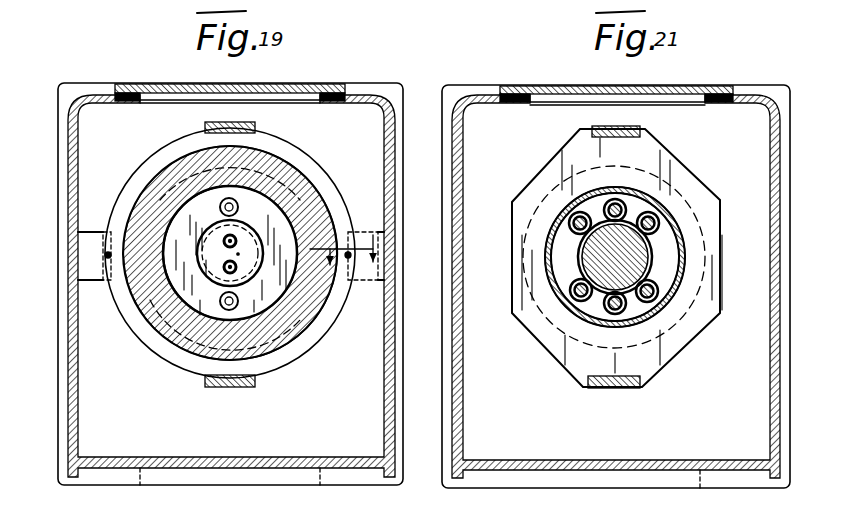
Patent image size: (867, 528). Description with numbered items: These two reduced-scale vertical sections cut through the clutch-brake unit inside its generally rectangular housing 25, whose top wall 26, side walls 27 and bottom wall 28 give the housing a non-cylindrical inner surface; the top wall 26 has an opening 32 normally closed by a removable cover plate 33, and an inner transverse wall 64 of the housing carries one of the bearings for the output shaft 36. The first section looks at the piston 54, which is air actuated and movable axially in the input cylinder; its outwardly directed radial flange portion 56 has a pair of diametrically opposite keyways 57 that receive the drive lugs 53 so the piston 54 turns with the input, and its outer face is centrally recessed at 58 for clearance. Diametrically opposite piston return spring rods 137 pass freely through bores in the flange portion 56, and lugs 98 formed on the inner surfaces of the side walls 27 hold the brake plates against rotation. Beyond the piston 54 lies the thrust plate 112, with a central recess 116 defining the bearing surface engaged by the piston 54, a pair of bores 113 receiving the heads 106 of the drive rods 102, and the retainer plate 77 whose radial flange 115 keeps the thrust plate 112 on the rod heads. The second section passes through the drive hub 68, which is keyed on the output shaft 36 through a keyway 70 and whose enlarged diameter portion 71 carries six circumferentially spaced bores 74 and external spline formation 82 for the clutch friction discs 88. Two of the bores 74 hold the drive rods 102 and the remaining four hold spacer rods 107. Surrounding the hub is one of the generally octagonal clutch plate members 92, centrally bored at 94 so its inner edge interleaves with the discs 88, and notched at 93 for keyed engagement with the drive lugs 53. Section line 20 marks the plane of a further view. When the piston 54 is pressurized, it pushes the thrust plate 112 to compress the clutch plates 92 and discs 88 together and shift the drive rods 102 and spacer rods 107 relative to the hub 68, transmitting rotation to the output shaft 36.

In FIG. 19, the section line 20— 20 is at (343, 236).
In FIG. 19, the housing 25 is at (97, 488).
In FIG. 21, the housing 25 is at (740, 490).
In FIG. 19, the top wall 26 is at (364, 93).
In FIG. 21, the top wall 26 is at (742, 95).
In FIG. 19, the side walls 27 is at (73, 341).
In FIG. 21, the side walls 27 is at (458, 381).
In FIG. 19, the bottom wall 28 is at (208, 470).
In FIG. 21, the bottom wall 28 is at (638, 470).
In FIG. 19, the opening 32 is at (330, 104).
In FIG. 21, the opening 32 is at (528, 104).
In FIG. 19, the cover plate 33 is at (290, 85).
In FIG. 21, the cover plate 33 is at (555, 86).
In FIG. 21, the output shaft 36 is at (634, 257).
In FIG. 19, the drive lugs 53 is at (232, 125).
In FIG. 21, the drive lugs 53 is at (642, 128).
In FIG. 19, the piston 54 is at (262, 243).
In FIG. 19, the radial flange portion 56 is at (333, 352).
In FIG. 19, the keyways 57 is at (212, 127).
In FIG. 19, the recess 58 is at (178, 216).
In FIG. 19, the transverse wall 64 is at (345, 430).
In FIG. 21, the drive hub 68 is at (687, 243).
In FIG. 19, the keyway 70 is at (224, 245).
In FIG. 21, the keyway 70 is at (582, 257).
In FIG. 21, the enlarged diameter portion 71 is at (637, 268).
In FIG. 21, the bores 74 is at (612, 200).
In FIG. 19, the retainer plate 77 is at (288, 232).
In FIG. 21, the external spline formation 82 is at (655, 298).
In FIG. 21, the clutch friction discs 88 is at (688, 170).
In FIG. 21, the clutch plate members 92 is at (672, 150).
In FIG. 21, the key notches 93 is at (594, 127).
In FIG. 21, the central bore 94 is at (580, 307).
In FIG. 19, the lugs 98 is at (95, 272).
In FIG. 19, the drive rods 102 is at (221, 203).
In FIG. 21, the drive rods 102 is at (617, 199).
In FIG. 19, the head portion 106 is at (205, 265).
In FIG. 21, the spacer rods 107 is at (568, 222).
In FIG. 19, the thrust plate 112 is at (292, 352).
In FIG. 19, the bores 113 is at (240, 206).
In FIG. 19, the radial flange 115 is at (300, 330).
In FIG. 19, the central recess 116 is at (300, 253).
In FIG. 19, the piston return spring rods 137 is at (105, 254).